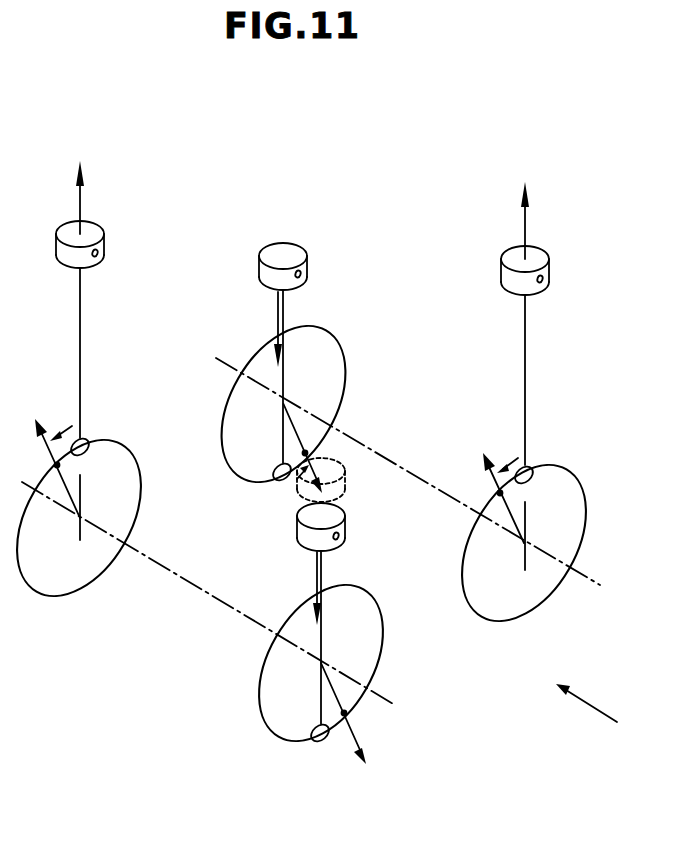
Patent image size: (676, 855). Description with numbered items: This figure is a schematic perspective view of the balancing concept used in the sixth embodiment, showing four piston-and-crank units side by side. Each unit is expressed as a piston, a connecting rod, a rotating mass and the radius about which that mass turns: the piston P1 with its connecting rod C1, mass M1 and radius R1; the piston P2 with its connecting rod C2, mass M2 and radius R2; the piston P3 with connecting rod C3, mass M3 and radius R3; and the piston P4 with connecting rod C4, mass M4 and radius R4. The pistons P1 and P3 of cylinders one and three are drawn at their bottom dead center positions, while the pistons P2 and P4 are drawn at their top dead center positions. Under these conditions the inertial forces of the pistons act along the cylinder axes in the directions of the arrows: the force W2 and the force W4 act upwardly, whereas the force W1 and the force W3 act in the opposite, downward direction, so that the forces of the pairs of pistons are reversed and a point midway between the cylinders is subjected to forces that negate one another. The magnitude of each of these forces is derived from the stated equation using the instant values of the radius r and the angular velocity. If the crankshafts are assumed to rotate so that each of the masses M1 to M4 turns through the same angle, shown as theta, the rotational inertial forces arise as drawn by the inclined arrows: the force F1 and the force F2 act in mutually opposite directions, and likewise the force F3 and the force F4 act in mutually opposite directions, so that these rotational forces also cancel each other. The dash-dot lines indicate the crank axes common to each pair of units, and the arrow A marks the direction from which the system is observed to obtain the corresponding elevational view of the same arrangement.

The inertial force of piston P4 W4 is at (99, 197).
The piston P4 is at (104, 248).
The connecting rod C4 is at (81, 362).
The radius R4 is at (137, 514).
The mass of connection arrangement M4 is at (88, 441).
The rotational inertial force F4 is at (47, 457).
The piston P3 is at (307, 266).
The connecting rod C3 is at (285, 316).
The inertial force of piston P3 W3 is at (259, 329).
The radius R3 is at (345, 361).
The mass of connection arrangement M3 is at (276, 480).
The rotational inertial force F3 is at (328, 453).
The piston P1 is at (345, 526).
The inertial force of piston P1 W1 is at (300, 588).
The connecting rod C1 is at (323, 638).
The radius R1 is at (373, 668).
The mass of connection arrangement M1 is at (318, 744).
The rotational inertial force F1 is at (354, 725).
The element r is at (344, 688).
The inertial force of piston P2 W2 is at (544, 220).
The piston P2 is at (549, 272).
The connecting rod C2 is at (526, 393).
The radius R2 is at (584, 515).
The mass of connection arrangement M2 is at (534, 470).
The rotational inertial force F2 is at (491, 485).
The arrow A is at (593, 713).